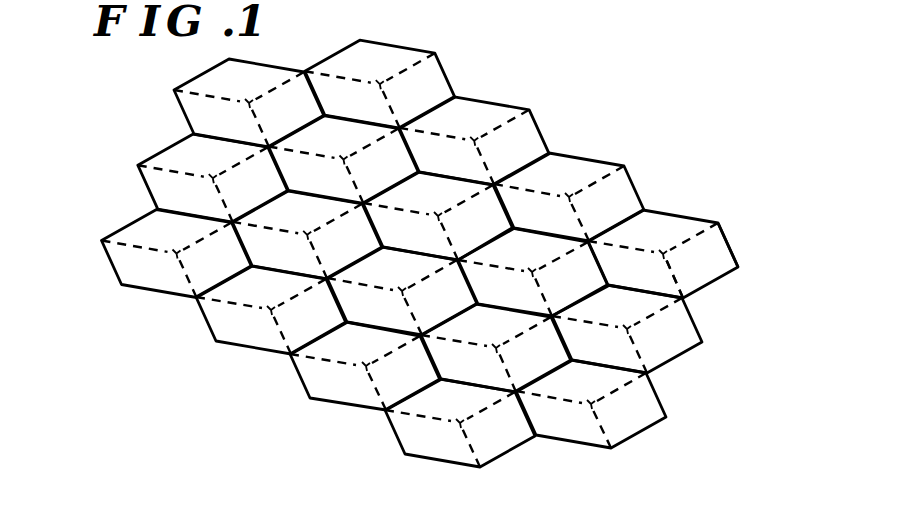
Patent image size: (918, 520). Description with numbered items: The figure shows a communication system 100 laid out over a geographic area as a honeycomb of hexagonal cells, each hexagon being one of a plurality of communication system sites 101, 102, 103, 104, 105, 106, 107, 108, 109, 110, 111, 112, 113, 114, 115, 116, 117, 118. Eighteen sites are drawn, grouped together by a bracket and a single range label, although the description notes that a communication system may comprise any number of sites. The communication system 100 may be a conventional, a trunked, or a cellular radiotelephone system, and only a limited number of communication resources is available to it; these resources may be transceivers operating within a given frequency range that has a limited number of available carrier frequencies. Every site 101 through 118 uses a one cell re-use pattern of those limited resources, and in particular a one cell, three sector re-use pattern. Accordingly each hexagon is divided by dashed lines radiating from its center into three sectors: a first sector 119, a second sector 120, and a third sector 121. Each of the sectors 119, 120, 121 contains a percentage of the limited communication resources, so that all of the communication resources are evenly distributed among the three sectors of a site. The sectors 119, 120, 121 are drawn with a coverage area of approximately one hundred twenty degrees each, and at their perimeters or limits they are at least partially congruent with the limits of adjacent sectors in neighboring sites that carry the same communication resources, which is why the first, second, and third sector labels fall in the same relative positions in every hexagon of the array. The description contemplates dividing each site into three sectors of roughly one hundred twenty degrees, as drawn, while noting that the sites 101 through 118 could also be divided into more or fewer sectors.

The communication system 100 is at (542, 74).
The communication system site 101 is at (482, 496).
The communication system site 102 is at (380, 84).
The communication system site 103 is at (213, 178).
The communication system site 104 is at (344, 160).
The communication system site 105 is at (474, 141).
The communication system site 106 is at (177, 254).
The communication system site 107 is at (307, 235).
The communication system site 108 is at (438, 216).
The communication system site 109 is at (569, 197).
The communication system site 110 is at (271, 310).
The communication system site 111 is at (402, 291).
The communication system site 112 is at (533, 272).
The communication system site 113 is at (690, 246).
The communication system site 114 is at (365, 366).
The communication system site 115 is at (496, 348).
The communication system site 116 is at (627, 329).
The communication system site 117 is at (460, 423).
The communication system site 118 is at (591, 404).
The sector F1 119 is at (683, 219).
The sector F2 120 is at (718, 240).
The sector F3 121 is at (670, 283).